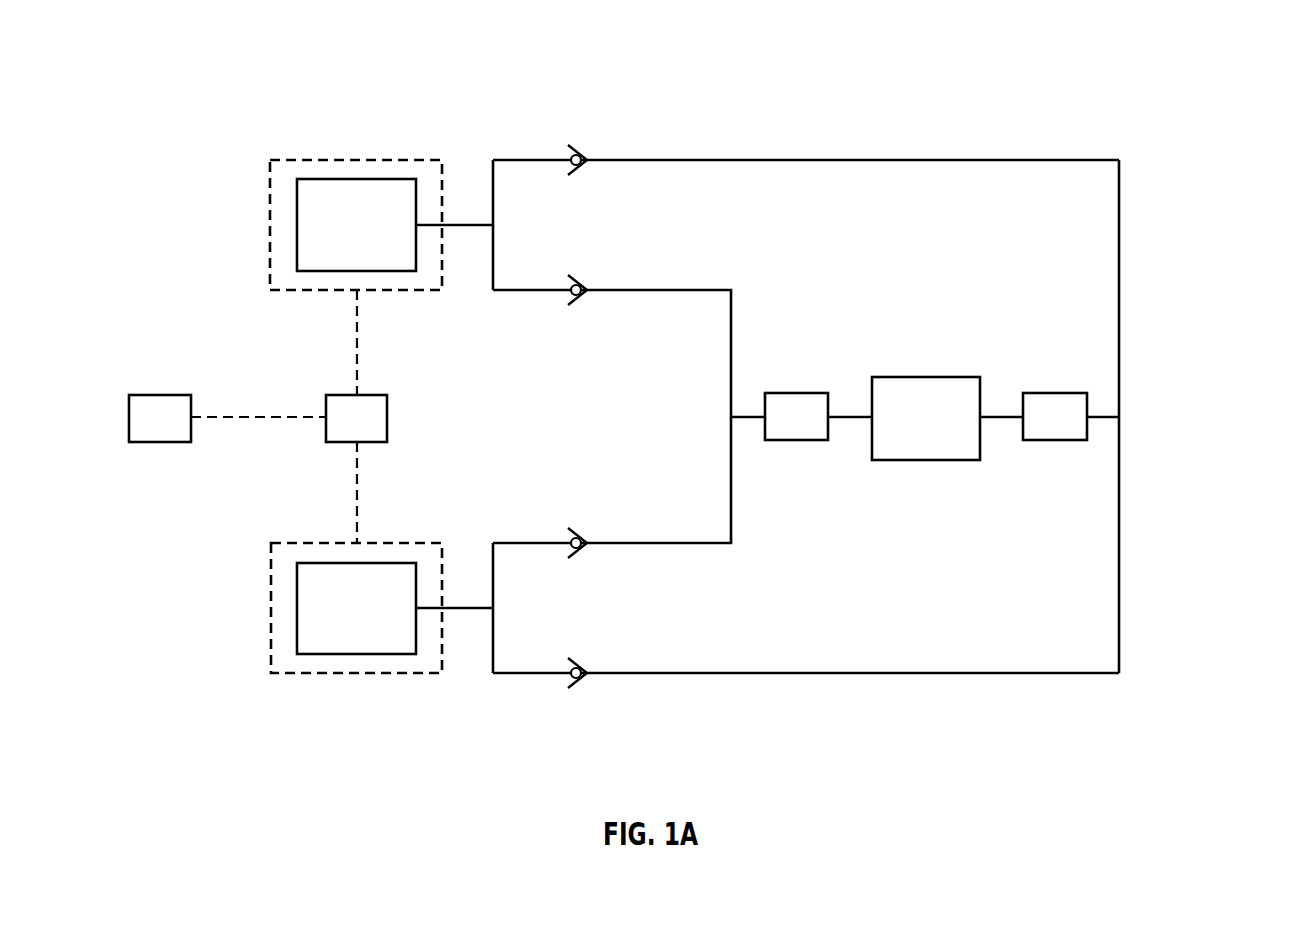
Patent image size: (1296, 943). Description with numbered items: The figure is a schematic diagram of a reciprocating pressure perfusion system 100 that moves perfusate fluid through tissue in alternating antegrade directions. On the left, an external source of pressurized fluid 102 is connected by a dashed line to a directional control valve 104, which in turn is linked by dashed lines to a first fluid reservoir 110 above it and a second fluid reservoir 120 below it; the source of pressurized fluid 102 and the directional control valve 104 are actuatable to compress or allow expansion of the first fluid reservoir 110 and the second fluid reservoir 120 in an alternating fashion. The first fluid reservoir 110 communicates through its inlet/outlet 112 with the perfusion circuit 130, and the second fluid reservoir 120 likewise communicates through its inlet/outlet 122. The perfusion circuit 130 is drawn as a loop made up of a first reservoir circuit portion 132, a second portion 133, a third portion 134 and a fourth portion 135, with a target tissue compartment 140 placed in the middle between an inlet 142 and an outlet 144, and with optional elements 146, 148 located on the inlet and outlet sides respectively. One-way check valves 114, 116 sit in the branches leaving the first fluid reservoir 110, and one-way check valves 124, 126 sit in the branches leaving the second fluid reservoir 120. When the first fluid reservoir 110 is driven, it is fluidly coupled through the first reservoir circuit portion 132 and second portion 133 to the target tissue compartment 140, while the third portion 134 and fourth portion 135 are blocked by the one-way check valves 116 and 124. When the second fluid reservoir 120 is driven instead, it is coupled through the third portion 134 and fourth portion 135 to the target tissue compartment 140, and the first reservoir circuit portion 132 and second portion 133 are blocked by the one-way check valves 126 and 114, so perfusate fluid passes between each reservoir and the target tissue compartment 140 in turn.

The reciprocating pressure perfusion system 100 is at (1215, 58).
The external source of pressurized fluid 102 is at (137, 395).
The directional control valve 104 is at (335, 395).
The first fluid reservoir 110 is at (289, 160).
The inlet/outlet 112 is at (476, 223).
The one-way check valve 114 is at (575, 298).
The one-way check valve 116 is at (582, 150).
The second fluid reservoir 120 is at (291, 674).
The inlet/outlet 122 is at (462, 612).
The one-way check valve 124 is at (575, 537).
The one-way check valve 126 is at (583, 683).
The perfusion circuit 130 is at (768, 160).
The first reservoir circuit portion 132 is at (670, 290).
The second portion 133 is at (938, 675).
The third portion 134 is at (648, 545).
The fourth portion 135 is at (1008, 160).
The target tissue compartment 140 is at (925, 377).
The inlet 142 is at (850, 420).
The outlet 144 is at (998, 420).
The optional element 146 is at (798, 393).
The optional element 148 is at (1053, 393).